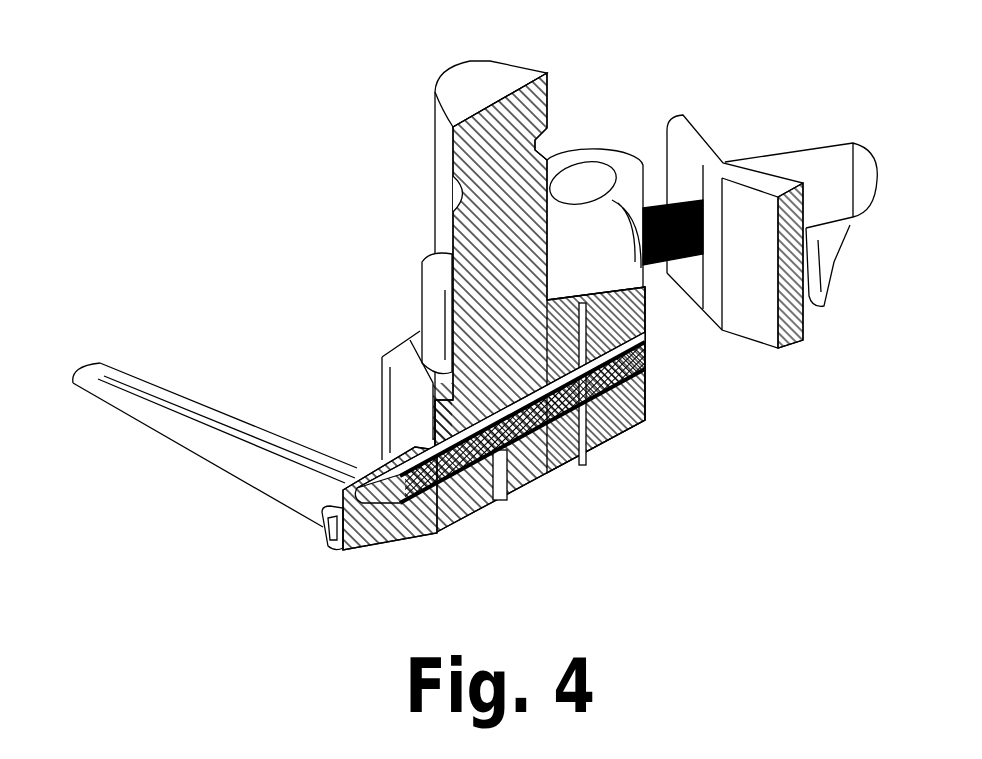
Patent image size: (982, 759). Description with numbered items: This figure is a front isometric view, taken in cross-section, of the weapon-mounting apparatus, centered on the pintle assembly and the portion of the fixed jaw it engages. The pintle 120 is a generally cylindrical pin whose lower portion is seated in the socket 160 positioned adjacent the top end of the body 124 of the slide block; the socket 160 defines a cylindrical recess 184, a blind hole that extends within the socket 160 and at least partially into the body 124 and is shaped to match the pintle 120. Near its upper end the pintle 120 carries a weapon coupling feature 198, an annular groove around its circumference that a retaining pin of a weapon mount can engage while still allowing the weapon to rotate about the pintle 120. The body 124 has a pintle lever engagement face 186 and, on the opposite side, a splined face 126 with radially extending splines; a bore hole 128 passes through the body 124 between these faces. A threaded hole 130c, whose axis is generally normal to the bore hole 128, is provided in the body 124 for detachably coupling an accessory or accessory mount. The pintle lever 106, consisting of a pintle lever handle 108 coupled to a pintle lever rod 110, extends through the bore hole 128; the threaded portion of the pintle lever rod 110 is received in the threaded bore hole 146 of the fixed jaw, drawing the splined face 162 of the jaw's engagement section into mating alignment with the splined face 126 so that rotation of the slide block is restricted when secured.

The pintle lever 106 is at (338, 550).
The pintle lever handle 108 is at (160, 392).
The pintle lever rod 110 is at (630, 385).
The pintle 120 is at (503, 72).
The body 124 is at (390, 372).
The splined face 126 is at (582, 412).
The bore hole 128 is at (474, 484).
The threaded hole 130c is at (501, 512).
The bore hole 146 is at (642, 348).
The socket 160 is at (425, 310).
The splined face 162 is at (588, 428).
The cylindrical recess 184 is at (437, 272).
The pintle lever engagement face 186 is at (403, 414).
The weapon coupling feature 198 is at (452, 182).